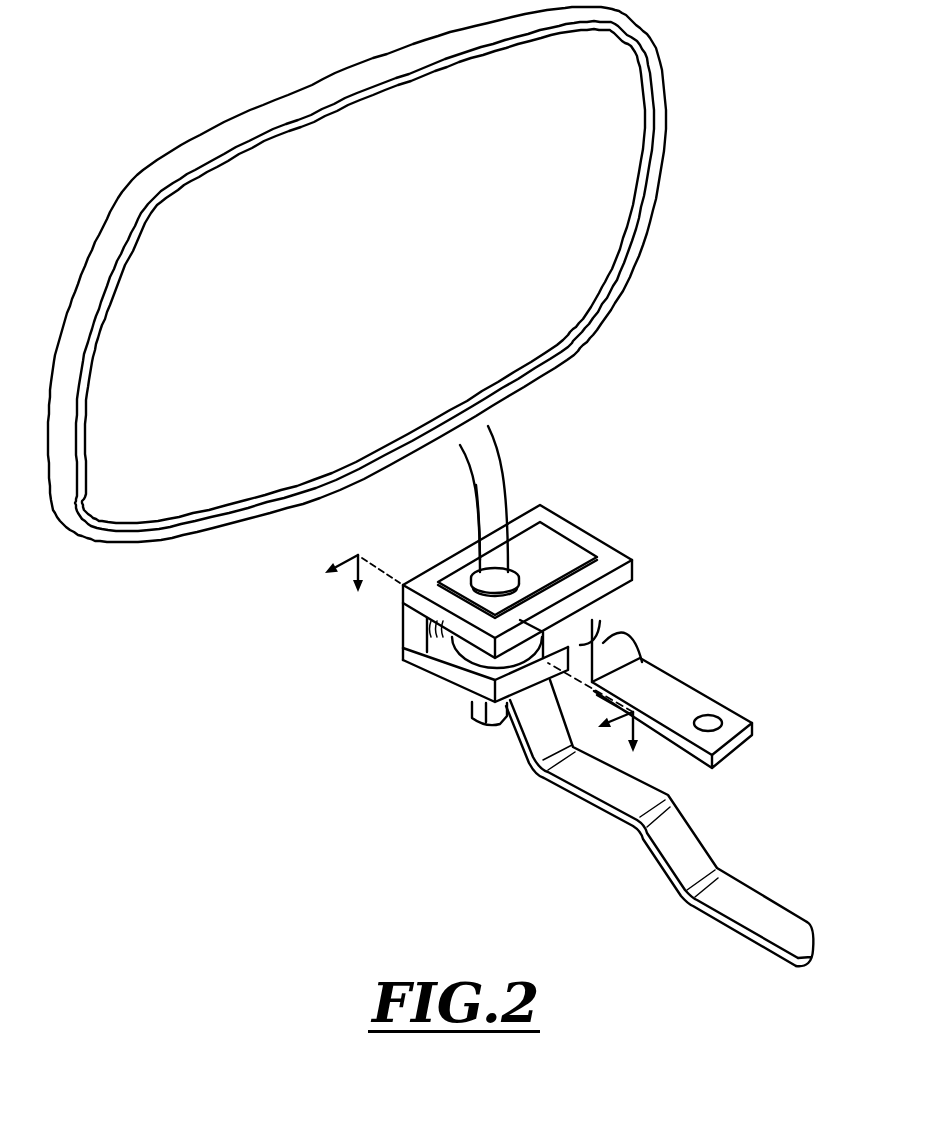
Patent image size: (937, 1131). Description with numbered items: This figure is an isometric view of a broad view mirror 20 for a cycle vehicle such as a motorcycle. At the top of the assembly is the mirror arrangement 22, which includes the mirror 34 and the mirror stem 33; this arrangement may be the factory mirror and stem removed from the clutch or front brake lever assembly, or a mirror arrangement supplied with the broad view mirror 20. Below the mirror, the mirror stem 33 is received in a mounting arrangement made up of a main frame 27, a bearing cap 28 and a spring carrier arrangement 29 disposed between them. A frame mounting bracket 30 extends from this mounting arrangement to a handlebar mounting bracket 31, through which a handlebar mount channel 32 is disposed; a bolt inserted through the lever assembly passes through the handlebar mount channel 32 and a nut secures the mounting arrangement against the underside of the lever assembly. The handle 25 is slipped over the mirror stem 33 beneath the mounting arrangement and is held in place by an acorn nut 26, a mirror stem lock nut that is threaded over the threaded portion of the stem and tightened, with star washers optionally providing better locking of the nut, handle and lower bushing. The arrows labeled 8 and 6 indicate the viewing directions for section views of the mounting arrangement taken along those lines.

The broad view mirror 20 is at (142, 88).
The mirror 34 is at (412, 58).
The mirror arrangement 22 is at (502, 476).
The mirror stem 33 is at (486, 513).
The main frame 27 is at (410, 627).
The bearing cap 28 is at (427, 664).
The spring carrier arrangement 29 is at (473, 664).
The acorn nut 26 is at (492, 727).
The frame mounting bracket 30 is at (583, 644).
The handlebar mounting bracket 31 is at (672, 688).
The handlebar mount channel 32 is at (708, 722).
The handle 25 is at (787, 952).
The section line 8 is at (467, 651).
The section line 6 is at (494, 666).